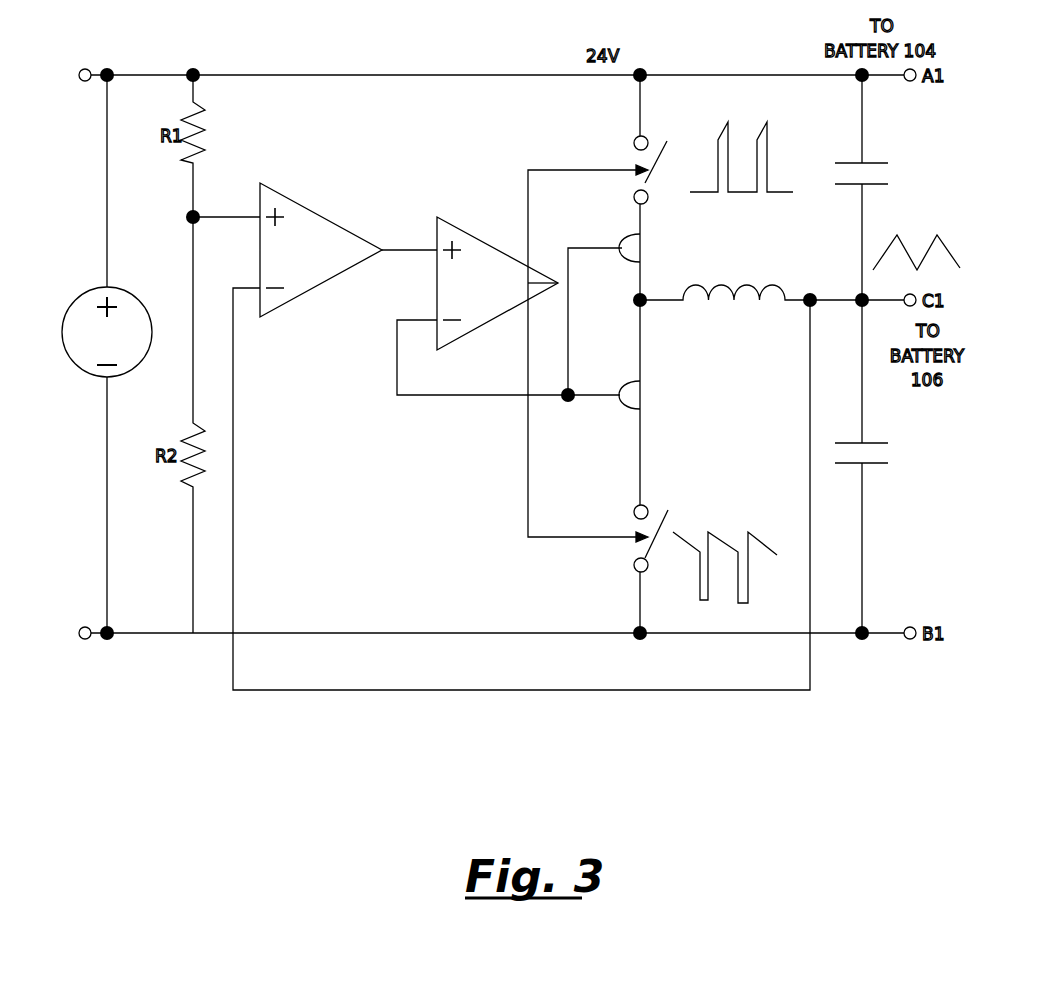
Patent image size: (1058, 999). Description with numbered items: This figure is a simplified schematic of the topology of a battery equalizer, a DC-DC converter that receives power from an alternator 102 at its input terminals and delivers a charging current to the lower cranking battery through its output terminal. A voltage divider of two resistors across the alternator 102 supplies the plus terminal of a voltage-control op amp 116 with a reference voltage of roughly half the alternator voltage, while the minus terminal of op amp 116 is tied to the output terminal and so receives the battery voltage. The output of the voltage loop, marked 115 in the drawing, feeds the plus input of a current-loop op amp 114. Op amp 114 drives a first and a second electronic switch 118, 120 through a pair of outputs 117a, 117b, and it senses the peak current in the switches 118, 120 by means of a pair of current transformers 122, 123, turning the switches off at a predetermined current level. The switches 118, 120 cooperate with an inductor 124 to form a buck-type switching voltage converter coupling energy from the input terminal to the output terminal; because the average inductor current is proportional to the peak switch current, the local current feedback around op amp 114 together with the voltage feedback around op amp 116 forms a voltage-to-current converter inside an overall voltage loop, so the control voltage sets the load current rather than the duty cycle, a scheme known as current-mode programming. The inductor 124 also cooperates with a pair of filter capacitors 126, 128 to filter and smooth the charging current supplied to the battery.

The alternator 102 is at (138, 295).
The operational amplifier 114 is at (492, 322).
The voltage loop output signal 115 is at (405, 248).
The voltage-control op amp 116 is at (316, 297).
The output of op amp 114 117a is at (570, 167).
The output of op amp 114 117b is at (527, 452).
The first electronic switch 118 is at (655, 172).
The second electronic switch 120 is at (667, 508).
The current transformer 122 is at (623, 236).
The current transformer 123 is at (623, 383).
The inductor 124 is at (748, 287).
The filter capacitor 126 is at (878, 163).
The filter capacitor 128 is at (878, 443).